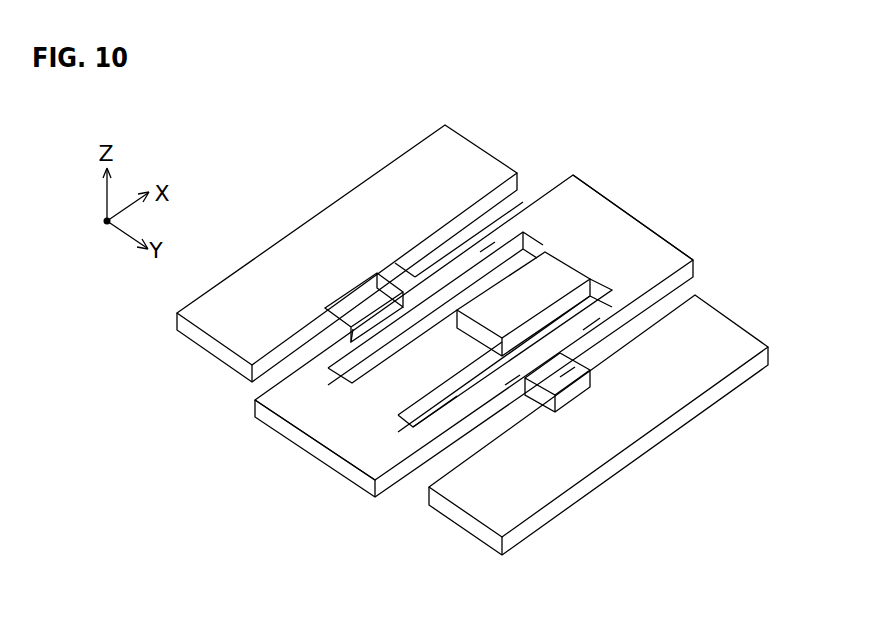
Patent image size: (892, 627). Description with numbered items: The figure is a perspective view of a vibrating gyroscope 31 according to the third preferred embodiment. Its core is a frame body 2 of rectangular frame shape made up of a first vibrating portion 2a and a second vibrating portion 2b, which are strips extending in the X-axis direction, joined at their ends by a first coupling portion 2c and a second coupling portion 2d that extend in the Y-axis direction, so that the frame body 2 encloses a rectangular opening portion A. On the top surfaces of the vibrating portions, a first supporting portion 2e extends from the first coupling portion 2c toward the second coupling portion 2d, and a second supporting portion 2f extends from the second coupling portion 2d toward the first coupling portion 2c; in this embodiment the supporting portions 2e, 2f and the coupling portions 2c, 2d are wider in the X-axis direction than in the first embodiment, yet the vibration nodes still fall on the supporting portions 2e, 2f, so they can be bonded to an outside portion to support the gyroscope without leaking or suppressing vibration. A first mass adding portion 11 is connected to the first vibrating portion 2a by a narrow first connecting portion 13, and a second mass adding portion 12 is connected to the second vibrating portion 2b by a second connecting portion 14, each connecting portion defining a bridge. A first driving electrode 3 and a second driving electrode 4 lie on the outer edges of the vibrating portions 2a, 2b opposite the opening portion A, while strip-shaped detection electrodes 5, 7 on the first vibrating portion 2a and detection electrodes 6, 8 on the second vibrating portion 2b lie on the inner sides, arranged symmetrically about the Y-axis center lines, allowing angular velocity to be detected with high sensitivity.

The vibrating gyroscope 31 is at (238, 113).
The frame body 2 is at (263, 428).
The first vibrating portion 2a is at (516, 190).
The second vibrating portion 2b is at (605, 340).
The first coupling portion 2c is at (607, 197).
The second coupling portion 2d is at (367, 458).
The first supporting portion 2e is at (502, 310).
The second supporting portion 2f is at (445, 352).
The first driving electrode 3 is at (380, 320).
The second driving electrode 4 is at (510, 382).
The first detection electrode 5 is at (353, 329).
The first detection electrode 6 is at (580, 332).
The second detection electrode 7 is at (480, 252).
The second detection electrode 8 is at (505, 385).
The first connecting portion 13 is at (408, 262).
The second connecting portion 14 is at (556, 378).
The first mass adding portion 11 is at (345, 193).
The second mass adding portion 12 is at (688, 420).
The opening portion A is at (450, 320).